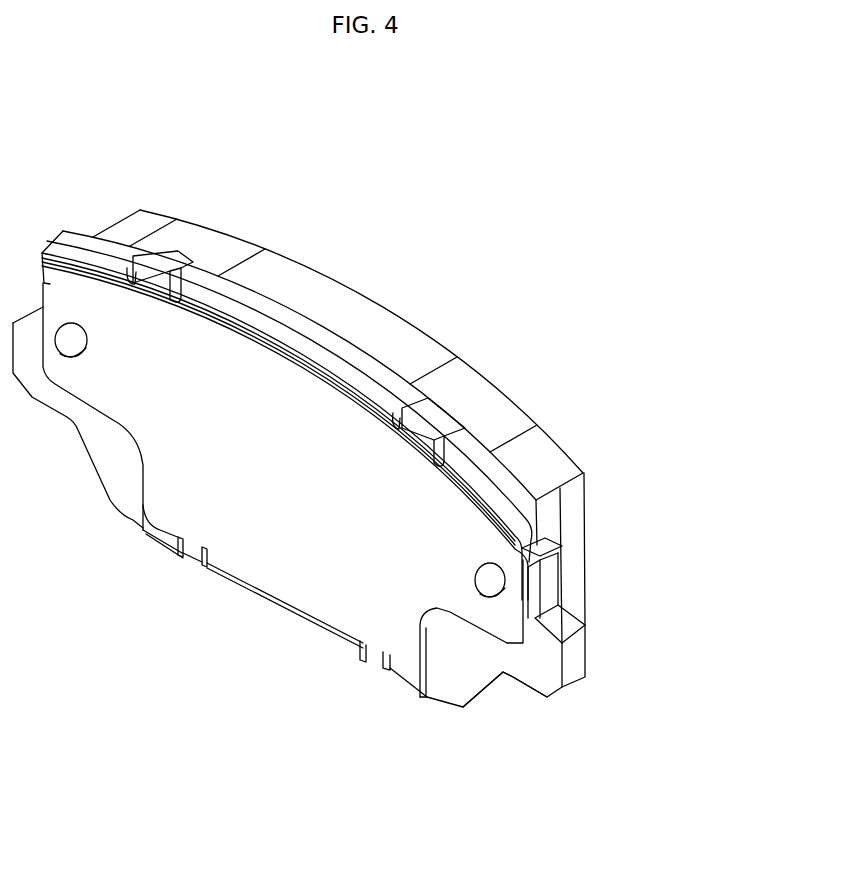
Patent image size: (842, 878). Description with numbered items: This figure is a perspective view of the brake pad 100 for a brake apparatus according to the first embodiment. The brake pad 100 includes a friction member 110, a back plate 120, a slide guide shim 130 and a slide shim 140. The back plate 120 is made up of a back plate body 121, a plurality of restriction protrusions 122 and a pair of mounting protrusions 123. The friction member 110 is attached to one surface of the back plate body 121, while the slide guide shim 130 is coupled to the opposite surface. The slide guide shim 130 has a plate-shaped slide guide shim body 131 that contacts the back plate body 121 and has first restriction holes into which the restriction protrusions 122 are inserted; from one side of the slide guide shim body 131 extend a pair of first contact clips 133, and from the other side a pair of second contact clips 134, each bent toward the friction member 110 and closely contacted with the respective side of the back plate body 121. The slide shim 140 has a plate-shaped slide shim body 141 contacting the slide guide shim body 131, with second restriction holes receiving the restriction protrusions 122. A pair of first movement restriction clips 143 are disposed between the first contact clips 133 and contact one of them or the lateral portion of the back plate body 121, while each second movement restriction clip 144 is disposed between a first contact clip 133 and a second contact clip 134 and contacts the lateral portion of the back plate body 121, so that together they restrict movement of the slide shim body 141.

The brake pad 100 is at (508, 179).
The friction member 110 is at (495, 412).
The back plate 120 is at (367, 757).
The back plate body 121 is at (468, 670).
The restriction protrusion 122 is at (486, 595).
The mounting protrusion 123 is at (542, 675).
The slide guide shim 130 is at (290, 339).
The slide guide shim body 131 is at (590, 657).
The first contact clip 133 is at (160, 534).
The second contact clip 134 is at (163, 256).
The slide shim 140 is at (168, 497).
The slide shim body 141 is at (167, 452).
The first movement restriction clip 143 is at (193, 552).
The second movement restriction clip 144 is at (550, 572).